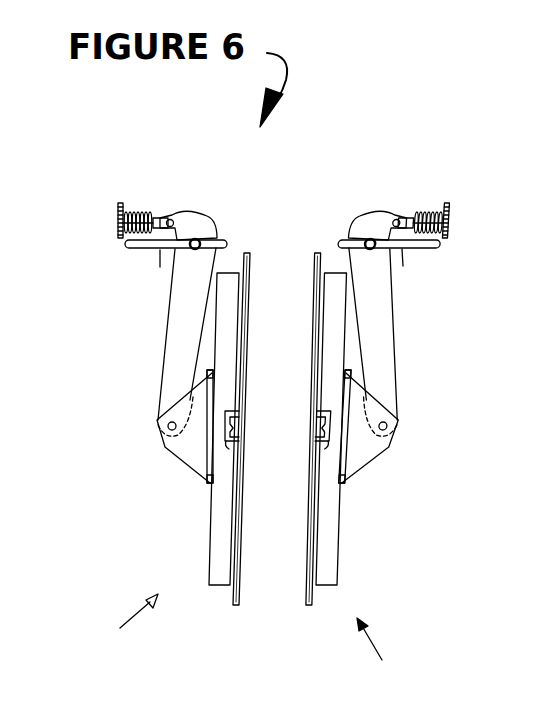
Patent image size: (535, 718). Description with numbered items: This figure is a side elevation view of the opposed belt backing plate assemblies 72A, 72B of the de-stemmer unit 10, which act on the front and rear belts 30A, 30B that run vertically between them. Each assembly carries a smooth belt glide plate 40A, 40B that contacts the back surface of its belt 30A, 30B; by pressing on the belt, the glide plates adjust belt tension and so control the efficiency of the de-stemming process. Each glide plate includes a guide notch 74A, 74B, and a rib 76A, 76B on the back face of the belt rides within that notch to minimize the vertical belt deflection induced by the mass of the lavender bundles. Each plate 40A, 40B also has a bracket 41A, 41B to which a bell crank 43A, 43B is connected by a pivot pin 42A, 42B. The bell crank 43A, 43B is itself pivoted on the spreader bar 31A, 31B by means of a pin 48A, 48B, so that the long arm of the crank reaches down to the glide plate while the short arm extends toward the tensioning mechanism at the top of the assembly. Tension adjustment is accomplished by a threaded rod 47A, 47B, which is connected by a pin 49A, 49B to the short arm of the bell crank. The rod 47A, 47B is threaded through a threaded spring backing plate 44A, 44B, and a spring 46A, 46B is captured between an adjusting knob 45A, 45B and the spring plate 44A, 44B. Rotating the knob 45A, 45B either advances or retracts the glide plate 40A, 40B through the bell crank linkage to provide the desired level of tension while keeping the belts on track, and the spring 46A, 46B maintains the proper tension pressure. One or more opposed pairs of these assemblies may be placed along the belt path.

The latch assembly 10 is at (534, 87).
The front belt 30A is at (231, 603).
The rear belt 30B is at (307, 603).
The spreader bar 31A is at (155, 272).
The spreader bar 31B is at (413, 273).
The smooth belt glide plate 40A is at (223, 550).
The smooth belt glide plate 40B is at (333, 548).
The bracket 41A is at (200, 449).
The bracket 41B is at (365, 448).
The pivot pin 42A is at (158, 421).
The pivot pin 42B is at (387, 427).
The bell crank 43A is at (180, 337).
The bell crank 43B is at (383, 341).
The threaded spring backing plate 44A is at (152, 247).
The threaded spring backing plate 44B is at (405, 250).
The adjusting knob 45A is at (118, 232).
The adjusting knob 45B is at (453, 222).
The spring 46A is at (133, 212).
The spring 46B is at (432, 218).
The threaded rod 47A is at (163, 216).
The threaded rod 47B is at (402, 218).
The pin 48A is at (217, 242).
The pin 48B is at (370, 241).
The pin 49A is at (175, 217).
The pin 49B is at (395, 218).
The belt backing plate assembly 72A is at (114, 631).
The belt backing plate assembly 72B is at (392, 643).
The guide notch 74A is at (229, 448).
The guide notch 74B is at (323, 458).
The rib 76A is at (243, 416).
The rib 76B is at (313, 422).